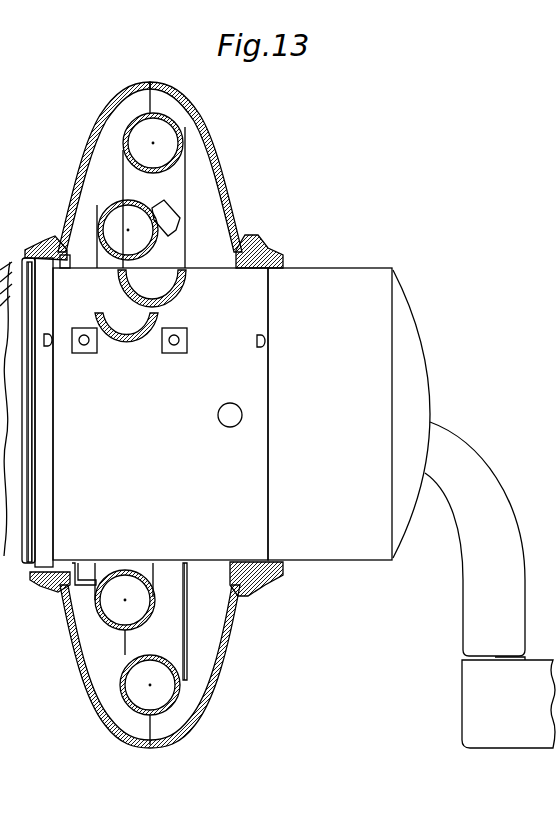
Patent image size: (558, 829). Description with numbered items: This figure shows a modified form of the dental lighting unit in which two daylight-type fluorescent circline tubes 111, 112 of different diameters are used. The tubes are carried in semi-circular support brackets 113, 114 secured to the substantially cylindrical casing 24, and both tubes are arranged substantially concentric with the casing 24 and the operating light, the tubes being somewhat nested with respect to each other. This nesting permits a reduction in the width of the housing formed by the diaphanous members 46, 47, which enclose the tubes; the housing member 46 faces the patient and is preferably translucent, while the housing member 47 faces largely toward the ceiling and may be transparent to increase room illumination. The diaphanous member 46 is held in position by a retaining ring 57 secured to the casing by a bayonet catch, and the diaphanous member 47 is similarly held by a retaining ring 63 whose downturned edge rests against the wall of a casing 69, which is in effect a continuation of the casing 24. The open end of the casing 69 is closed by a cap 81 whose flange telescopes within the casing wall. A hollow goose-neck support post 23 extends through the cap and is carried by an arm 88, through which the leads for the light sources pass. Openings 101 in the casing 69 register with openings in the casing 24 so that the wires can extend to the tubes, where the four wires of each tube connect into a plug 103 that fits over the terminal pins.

The outlet pipe 23 is at (483, 470).
The casing 24 is at (145, 411).
The housing member 46 is at (82, 168).
The housing member 47 is at (233, 190).
The retaining ring 57 is at (47, 247).
The retaining ring 63 is at (263, 250).
The casing 69 is at (325, 277).
The cap 81 is at (410, 299).
The arm 88 is at (472, 684).
The openings 101 is at (223, 423).
The plug 103 is at (173, 225).
The fluorescent circline tube 111 is at (143, 203).
The fluorescent circline tube 112 is at (182, 127).
The semi-circular support bracket 113 is at (132, 340).
The semi-circular support bracket 114 is at (186, 283).